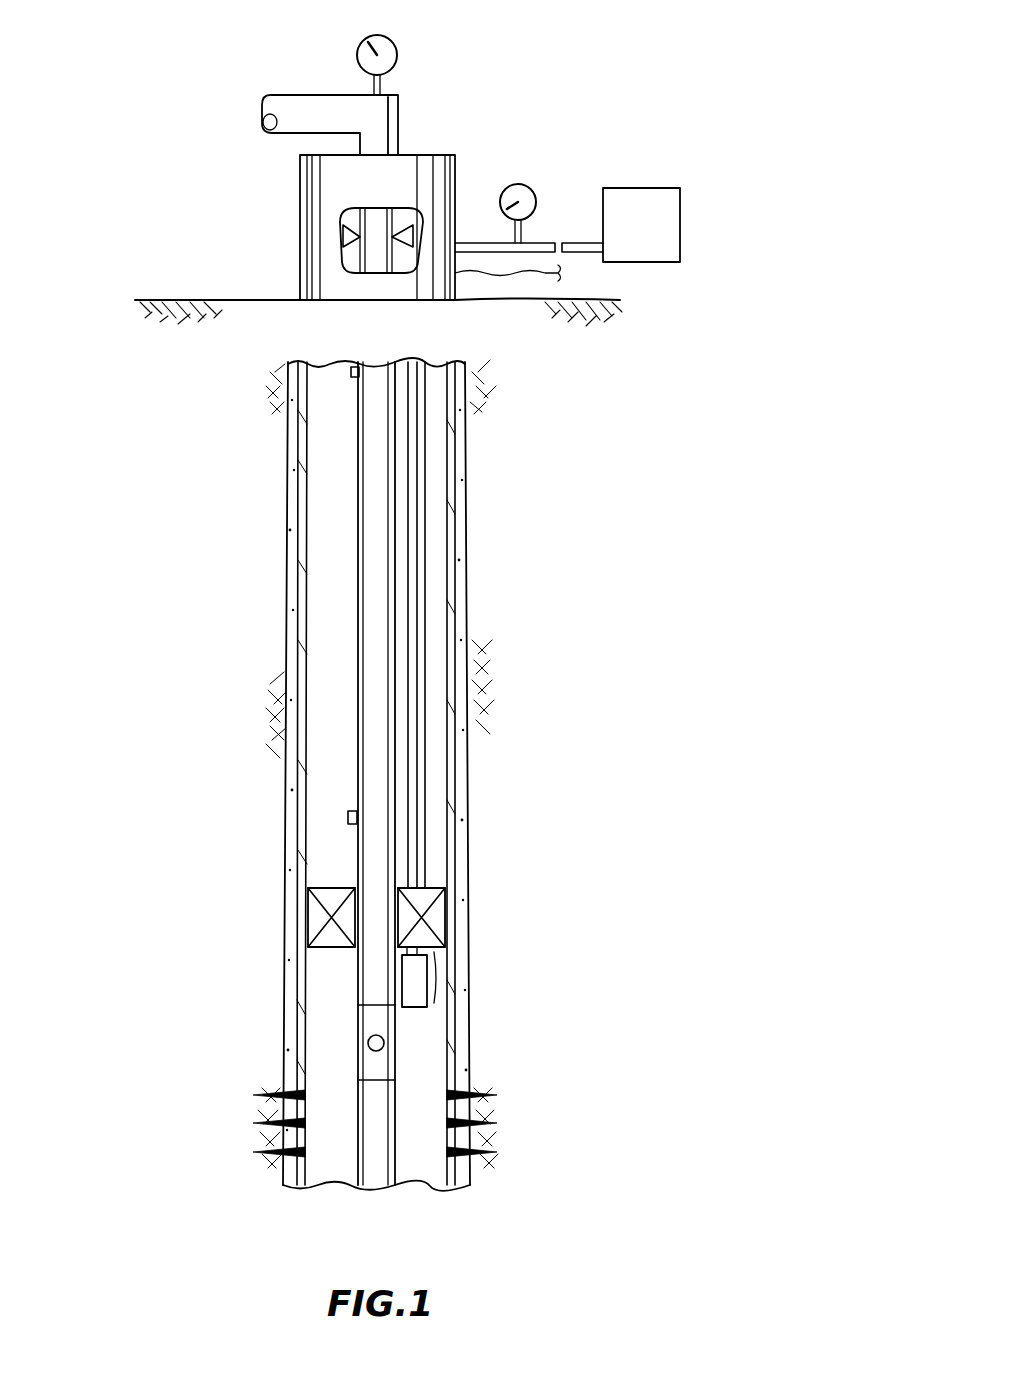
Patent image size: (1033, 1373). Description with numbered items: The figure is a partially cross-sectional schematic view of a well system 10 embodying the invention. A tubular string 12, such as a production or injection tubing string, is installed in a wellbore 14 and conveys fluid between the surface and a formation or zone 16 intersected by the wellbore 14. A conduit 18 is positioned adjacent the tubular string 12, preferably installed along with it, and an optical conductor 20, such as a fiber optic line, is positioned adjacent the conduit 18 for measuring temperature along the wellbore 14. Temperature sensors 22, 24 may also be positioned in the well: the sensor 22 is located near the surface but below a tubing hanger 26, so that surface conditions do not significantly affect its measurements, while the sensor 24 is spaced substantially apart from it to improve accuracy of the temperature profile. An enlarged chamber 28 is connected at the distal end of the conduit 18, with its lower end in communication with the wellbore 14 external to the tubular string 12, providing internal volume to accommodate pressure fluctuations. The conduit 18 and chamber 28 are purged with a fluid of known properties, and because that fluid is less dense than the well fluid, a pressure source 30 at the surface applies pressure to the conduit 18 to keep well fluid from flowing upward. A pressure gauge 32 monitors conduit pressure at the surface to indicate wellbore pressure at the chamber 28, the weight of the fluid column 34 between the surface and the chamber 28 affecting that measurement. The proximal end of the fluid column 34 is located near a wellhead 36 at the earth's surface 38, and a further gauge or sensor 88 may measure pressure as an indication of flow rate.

The well system 10 is at (676, 69).
The tubular string 12 is at (358, 541).
The wellbore 14 is at (305, 600).
The formation or zone 16 is at (500, 1132).
The conduit 18 is at (418, 515).
The optical conductor 20 is at (428, 543).
The temperature sensor 22 is at (352, 372).
The temperature sensor 24 is at (348, 817).
The tubing hanger 26 is at (345, 245).
The enlarged chamber 28 is at (402, 980).
The pressure source 30 is at (680, 215).
The pressure gauge 32 is at (527, 185).
The fluid column 34 is at (412, 785).
The wellhead 36 is at (300, 173).
The earth's surface 38 is at (152, 300).
The pressure sensor 88 is at (398, 55).